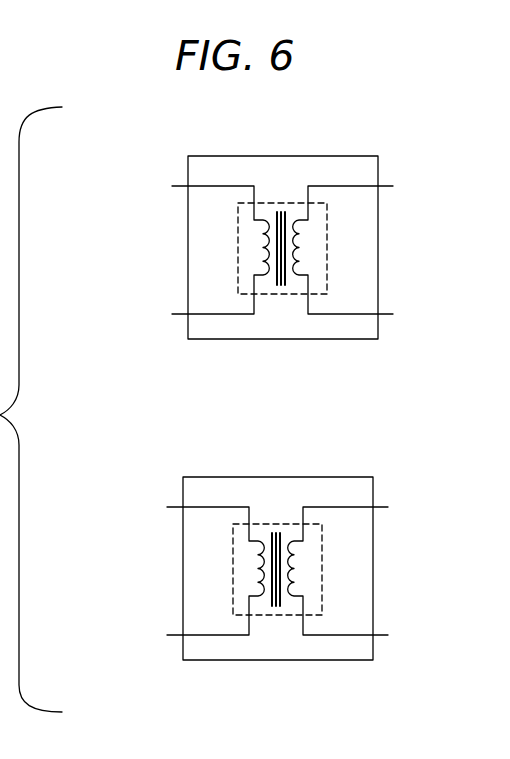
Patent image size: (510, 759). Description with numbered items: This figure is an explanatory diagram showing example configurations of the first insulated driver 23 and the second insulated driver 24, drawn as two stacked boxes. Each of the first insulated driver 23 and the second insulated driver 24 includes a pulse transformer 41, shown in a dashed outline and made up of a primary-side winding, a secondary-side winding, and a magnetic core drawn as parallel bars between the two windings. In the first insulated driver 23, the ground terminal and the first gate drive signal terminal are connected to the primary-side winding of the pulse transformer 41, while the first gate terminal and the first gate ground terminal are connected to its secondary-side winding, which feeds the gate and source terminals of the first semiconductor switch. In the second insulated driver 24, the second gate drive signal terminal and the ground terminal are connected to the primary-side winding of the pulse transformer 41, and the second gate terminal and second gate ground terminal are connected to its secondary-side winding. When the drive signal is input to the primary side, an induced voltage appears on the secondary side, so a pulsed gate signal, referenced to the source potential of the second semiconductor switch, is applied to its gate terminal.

The first insulated driver 23 is at (241, 155).
The second insulated driver 24 is at (295, 542).
The pulse transformer 41 is at (283, 202).